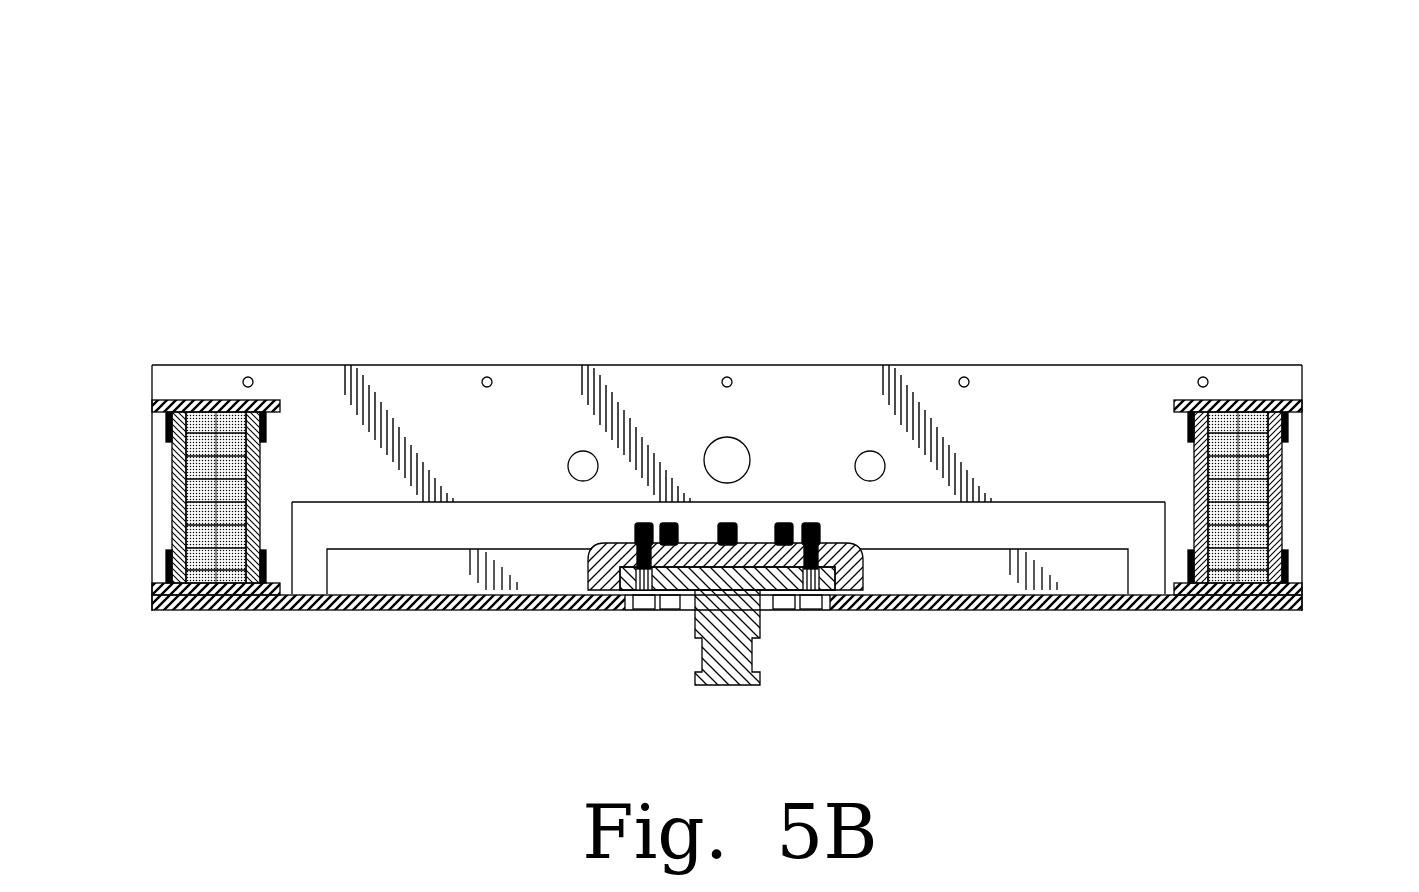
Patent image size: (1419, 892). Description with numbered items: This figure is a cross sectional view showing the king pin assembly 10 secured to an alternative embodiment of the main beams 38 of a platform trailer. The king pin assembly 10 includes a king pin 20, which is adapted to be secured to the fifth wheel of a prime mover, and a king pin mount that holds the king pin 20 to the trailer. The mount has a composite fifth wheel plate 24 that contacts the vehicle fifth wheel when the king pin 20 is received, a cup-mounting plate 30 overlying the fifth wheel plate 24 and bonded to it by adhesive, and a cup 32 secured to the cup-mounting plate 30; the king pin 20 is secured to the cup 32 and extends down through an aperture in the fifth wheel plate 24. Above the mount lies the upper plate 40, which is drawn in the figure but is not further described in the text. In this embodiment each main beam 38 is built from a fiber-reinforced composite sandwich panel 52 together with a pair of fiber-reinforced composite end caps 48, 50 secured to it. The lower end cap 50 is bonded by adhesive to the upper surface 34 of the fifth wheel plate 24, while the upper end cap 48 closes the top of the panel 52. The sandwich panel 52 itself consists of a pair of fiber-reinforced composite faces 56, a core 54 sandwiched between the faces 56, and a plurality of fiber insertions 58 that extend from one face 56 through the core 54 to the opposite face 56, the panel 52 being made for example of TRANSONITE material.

The king pin assembly 10 is at (219, 153).
The king pin 20 is at (745, 655).
The composite fifth wheel plate 24 is at (210, 612).
The cup-mounting plate 30 is at (368, 572).
The cup 32 is at (598, 596).
The upper surface of the composite fifth wheel plate 34 is at (393, 590).
The main beams 38 is at (172, 492).
The upper plate 40 is at (820, 390).
The upper end cap 48 is at (205, 400).
The lower end cap 50 is at (152, 612).
The fiber-reinforced composite sandwich panel 52 is at (272, 456).
The core 54 is at (172, 452).
The fiber-reinforced composite faces 56 is at (260, 488).
The fiber insertions 58 is at (236, 432).